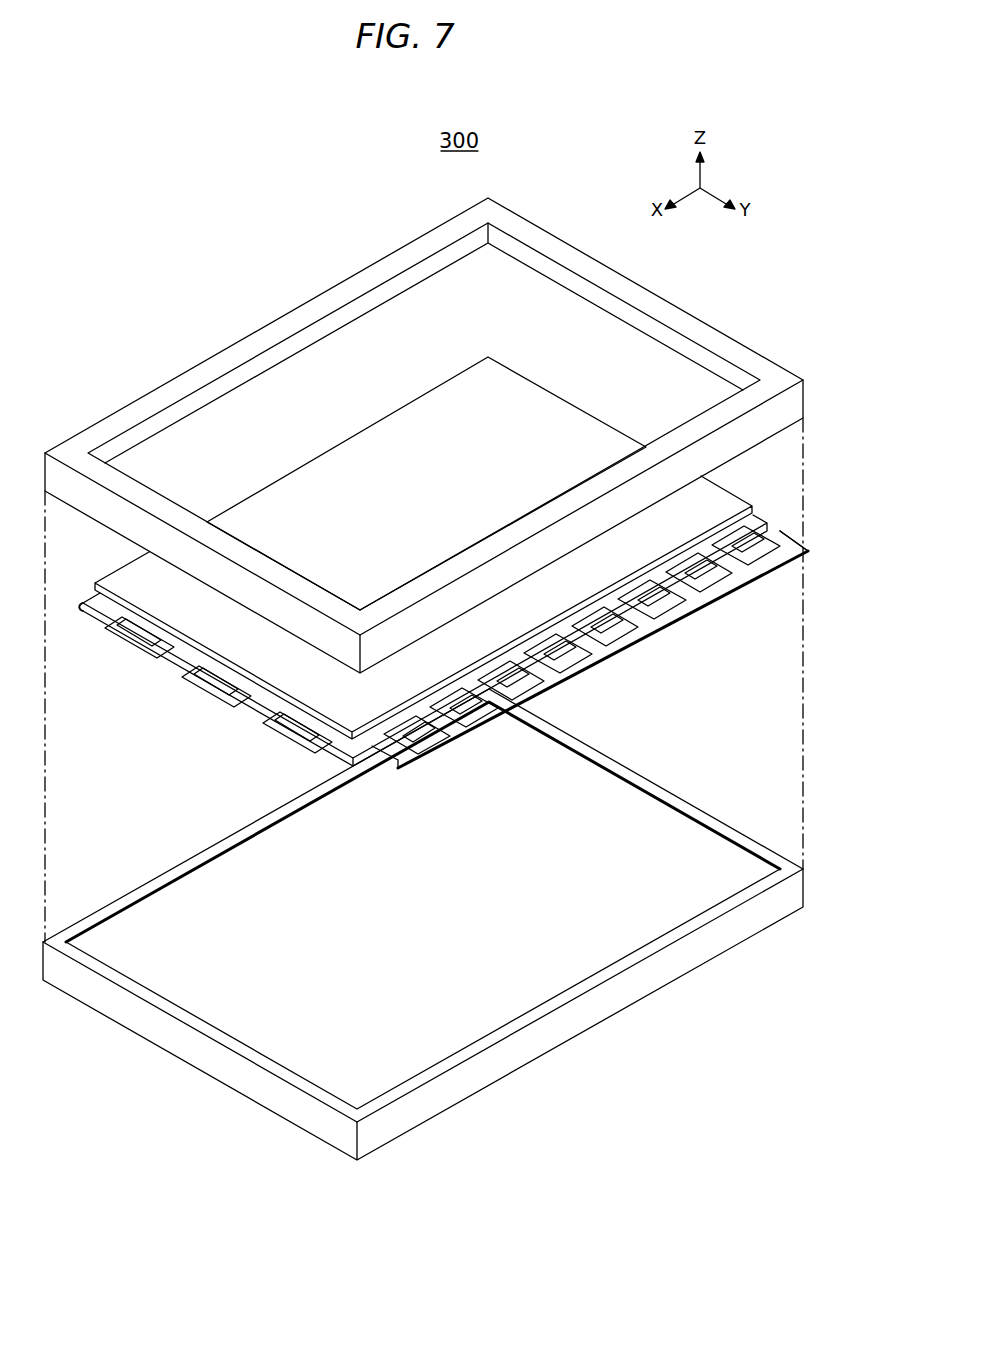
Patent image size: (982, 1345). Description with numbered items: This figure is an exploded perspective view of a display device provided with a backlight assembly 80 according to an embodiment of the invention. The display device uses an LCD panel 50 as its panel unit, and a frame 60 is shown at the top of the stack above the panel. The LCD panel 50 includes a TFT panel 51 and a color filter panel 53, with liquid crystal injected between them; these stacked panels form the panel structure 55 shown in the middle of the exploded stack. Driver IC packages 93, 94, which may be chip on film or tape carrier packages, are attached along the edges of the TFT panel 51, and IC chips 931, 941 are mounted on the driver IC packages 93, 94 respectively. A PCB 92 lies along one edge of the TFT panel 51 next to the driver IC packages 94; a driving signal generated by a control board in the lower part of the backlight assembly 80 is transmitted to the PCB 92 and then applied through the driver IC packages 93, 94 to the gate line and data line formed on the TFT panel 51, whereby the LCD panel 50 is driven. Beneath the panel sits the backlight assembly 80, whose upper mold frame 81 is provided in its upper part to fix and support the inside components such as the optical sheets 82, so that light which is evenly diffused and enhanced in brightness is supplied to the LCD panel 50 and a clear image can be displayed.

The top frame 60 is at (749, 354).
The LCD panel 50 is at (366, 449).
The panel assembly 55 is at (426, 614).
The color filter panel 53 is at (733, 493).
The TFT panel 51 is at (760, 519).
The driver IC package 93 is at (105, 627).
The IC chip 931 is at (85, 598).
The PCB 92 is at (606, 626).
The driver IC package 94 is at (777, 532).
The IC chip 941 is at (800, 557).
The backlight assembly 80 is at (458, 924).
The upper mold frame 81 is at (648, 808).
The optical sheets 82 is at (600, 777).